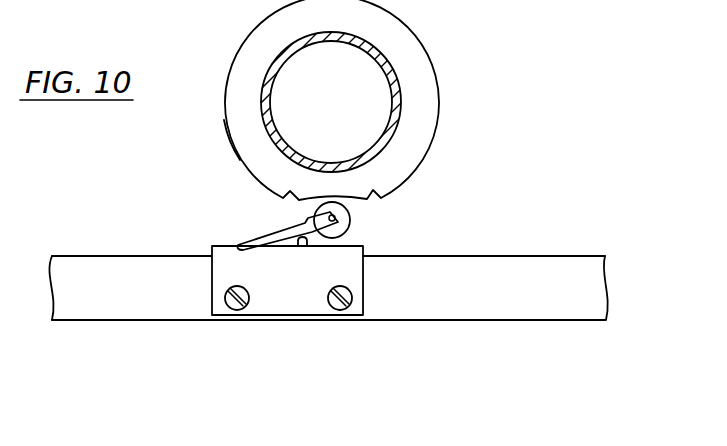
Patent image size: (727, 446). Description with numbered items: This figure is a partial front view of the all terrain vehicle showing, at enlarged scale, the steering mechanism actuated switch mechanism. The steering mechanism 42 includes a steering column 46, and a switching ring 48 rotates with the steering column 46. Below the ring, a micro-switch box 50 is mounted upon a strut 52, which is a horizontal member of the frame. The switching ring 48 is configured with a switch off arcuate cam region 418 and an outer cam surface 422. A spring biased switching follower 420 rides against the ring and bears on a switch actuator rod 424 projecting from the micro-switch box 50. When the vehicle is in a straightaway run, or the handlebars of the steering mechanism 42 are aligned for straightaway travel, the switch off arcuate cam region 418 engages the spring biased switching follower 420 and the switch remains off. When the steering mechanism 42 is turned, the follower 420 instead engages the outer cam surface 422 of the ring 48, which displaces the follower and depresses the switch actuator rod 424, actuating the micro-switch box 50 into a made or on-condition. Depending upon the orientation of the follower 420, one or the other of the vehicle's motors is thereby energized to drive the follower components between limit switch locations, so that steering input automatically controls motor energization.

The steering mechanism 42 is at (523, 54).
The steering column 46 is at (373, 48).
The switching ring 48 is at (422, 80).
The micro-switch box 50 is at (305, 300).
The strut 52 is at (442, 305).
The switch off arcuate cam region 418 is at (302, 206).
The spring biased switching follower 420 is at (351, 225).
The outer cam surface 422 is at (232, 148).
The switch actuator rod 424 is at (302, 250).